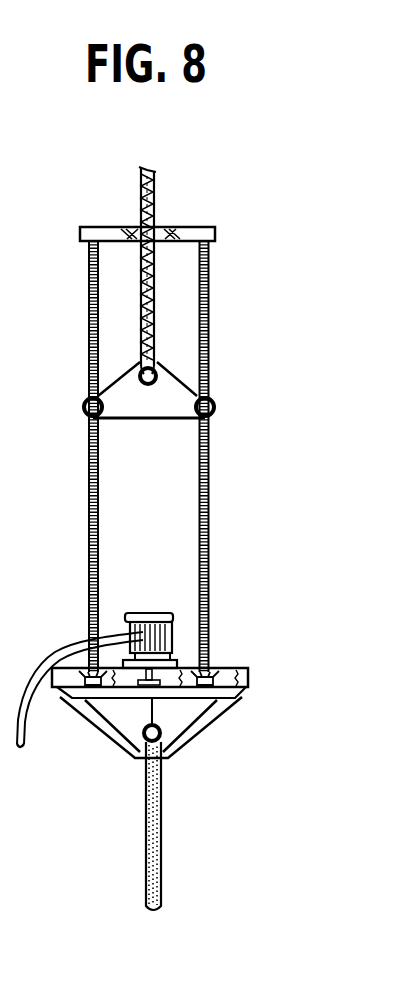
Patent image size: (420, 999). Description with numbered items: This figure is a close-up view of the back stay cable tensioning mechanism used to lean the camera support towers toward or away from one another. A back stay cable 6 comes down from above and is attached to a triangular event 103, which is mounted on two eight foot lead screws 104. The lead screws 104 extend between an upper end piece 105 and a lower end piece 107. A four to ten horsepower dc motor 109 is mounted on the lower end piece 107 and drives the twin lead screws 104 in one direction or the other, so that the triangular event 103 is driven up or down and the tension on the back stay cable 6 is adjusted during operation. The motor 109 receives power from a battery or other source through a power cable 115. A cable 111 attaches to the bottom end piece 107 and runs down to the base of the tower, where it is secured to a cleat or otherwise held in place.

The back stay cable 6 is at (157, 181).
The end piece 105 is at (210, 223).
The triangular event 103 is at (173, 367).
The lead screws 104 is at (188, 545).
The dc motor 109 is at (175, 632).
The power cable 115 is at (43, 652).
The end piece 107 is at (249, 675).
The cable 111 is at (163, 825).